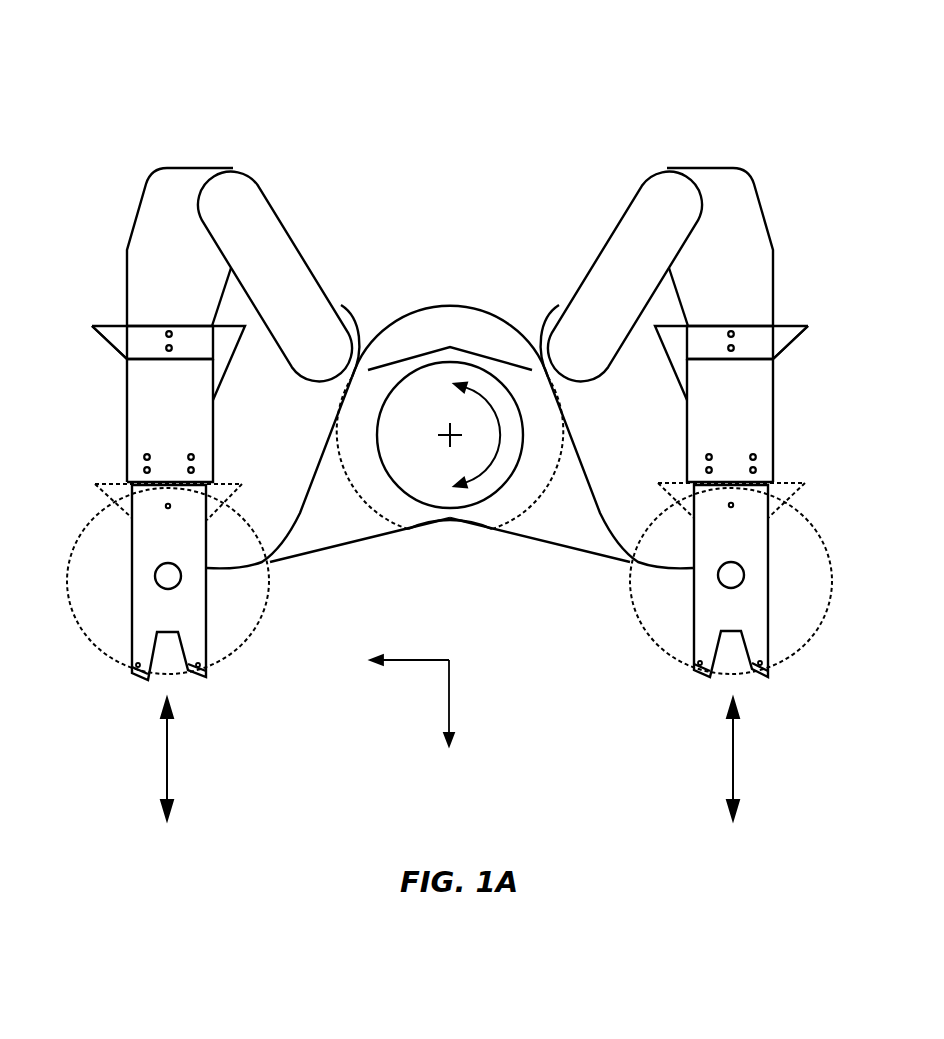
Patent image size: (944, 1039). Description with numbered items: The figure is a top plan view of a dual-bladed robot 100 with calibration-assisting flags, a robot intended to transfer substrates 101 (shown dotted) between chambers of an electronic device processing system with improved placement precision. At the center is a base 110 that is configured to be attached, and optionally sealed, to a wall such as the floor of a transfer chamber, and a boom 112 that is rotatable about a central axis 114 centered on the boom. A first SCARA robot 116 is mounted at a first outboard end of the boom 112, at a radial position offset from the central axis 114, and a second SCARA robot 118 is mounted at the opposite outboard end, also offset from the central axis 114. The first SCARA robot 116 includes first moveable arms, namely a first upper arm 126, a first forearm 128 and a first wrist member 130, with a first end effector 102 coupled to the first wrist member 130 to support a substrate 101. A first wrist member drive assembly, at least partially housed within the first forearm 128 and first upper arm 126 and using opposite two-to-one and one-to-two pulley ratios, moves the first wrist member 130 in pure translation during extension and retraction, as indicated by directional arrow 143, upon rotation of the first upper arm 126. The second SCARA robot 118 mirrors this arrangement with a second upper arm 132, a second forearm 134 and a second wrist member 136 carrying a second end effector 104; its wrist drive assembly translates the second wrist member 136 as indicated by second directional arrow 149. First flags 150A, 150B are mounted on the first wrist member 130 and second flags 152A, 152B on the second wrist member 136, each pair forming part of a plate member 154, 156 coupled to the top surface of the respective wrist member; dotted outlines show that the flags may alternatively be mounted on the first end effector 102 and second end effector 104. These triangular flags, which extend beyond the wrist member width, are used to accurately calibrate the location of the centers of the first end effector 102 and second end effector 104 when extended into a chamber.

The dual-bladed robot 100 is at (488, 72).
The substrate 101 is at (240, 648).
The first end effector 102 is at (207, 603).
The second end effector 104 is at (693, 595).
The base 110 is at (482, 337).
The boom 112 is at (418, 355).
The central axis 114 is at (450, 435).
The first SCARA robot 116 is at (262, 132).
The second SCARA robot 118 is at (727, 128).
The first upper arm 126 is at (283, 449).
The first forearm 128 is at (295, 238).
The first wrist member 130 is at (127, 280).
The second upper arm 132 is at (652, 449).
The second forearm 134 is at (600, 247).
The second wrist member 136 is at (773, 267).
The directional arrow 143 is at (168, 752).
The second directional arrow 149 is at (734, 752).
The first flag 150A is at (110, 333).
The first flag 150B is at (223, 334).
The second flag 152A is at (777, 343).
The second flag 152B is at (678, 340).
The plate member 154 is at (148, 325).
The plate member 156 is at (712, 327).